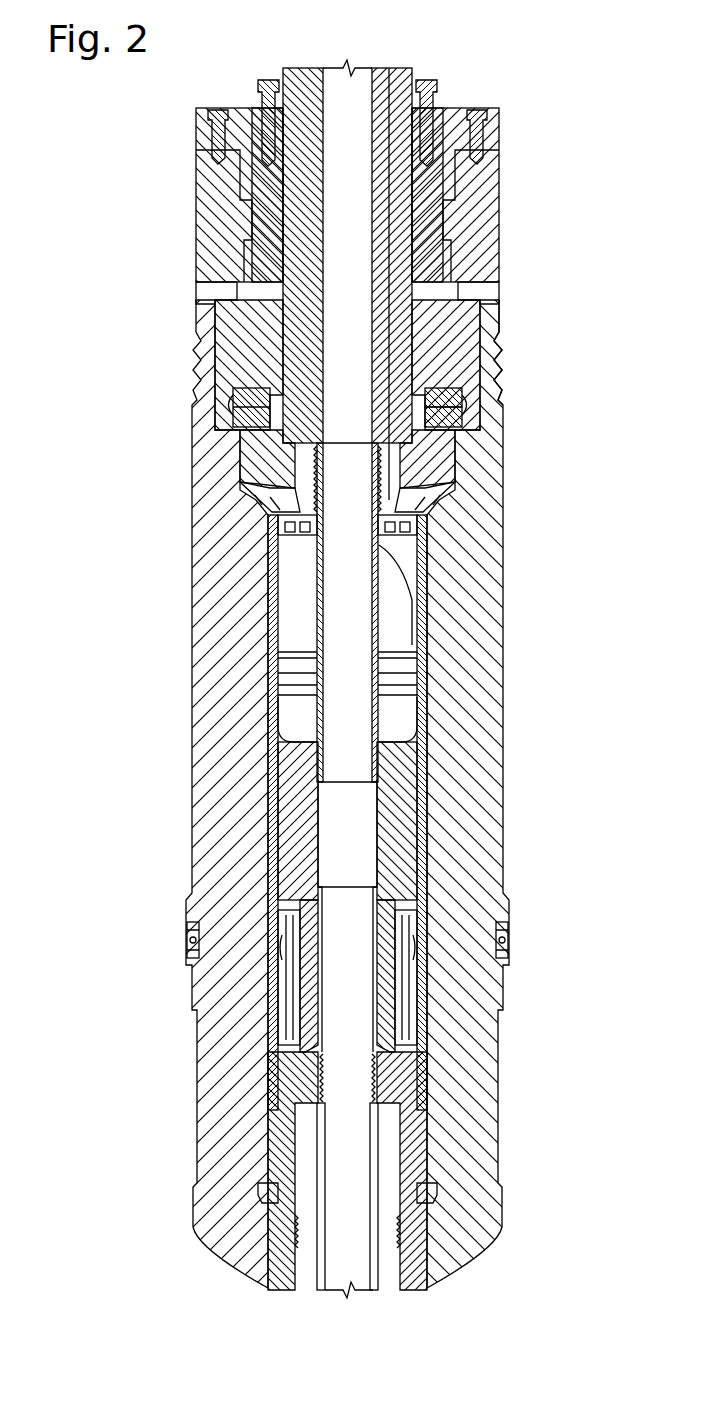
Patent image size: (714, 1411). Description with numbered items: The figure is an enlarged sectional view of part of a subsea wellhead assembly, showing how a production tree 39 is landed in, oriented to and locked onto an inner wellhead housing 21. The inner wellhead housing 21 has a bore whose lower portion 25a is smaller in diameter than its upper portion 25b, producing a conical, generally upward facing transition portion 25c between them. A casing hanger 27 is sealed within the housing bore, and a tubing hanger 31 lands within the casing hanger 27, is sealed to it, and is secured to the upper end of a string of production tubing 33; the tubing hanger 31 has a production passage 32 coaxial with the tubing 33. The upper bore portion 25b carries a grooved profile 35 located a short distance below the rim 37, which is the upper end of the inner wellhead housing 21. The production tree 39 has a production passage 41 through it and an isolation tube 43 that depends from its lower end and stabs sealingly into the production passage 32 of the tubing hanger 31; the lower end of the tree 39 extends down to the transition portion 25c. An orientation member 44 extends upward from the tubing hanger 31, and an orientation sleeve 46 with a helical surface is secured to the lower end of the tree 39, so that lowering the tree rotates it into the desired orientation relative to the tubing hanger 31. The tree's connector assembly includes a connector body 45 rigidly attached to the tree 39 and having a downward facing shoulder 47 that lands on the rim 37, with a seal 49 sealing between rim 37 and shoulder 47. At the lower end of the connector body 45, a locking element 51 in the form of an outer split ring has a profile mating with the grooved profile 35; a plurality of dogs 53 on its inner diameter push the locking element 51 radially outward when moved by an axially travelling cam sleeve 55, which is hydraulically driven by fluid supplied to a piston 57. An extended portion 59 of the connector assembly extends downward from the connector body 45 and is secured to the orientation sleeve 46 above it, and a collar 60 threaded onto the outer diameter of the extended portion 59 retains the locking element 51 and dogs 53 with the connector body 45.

The inner wellhead housing 21 is at (488, 832).
The lower portion of bore 25a is at (298, 790).
The upper portion of bore 25b is at (245, 358).
The transition portion 25c is at (270, 490).
The casing hanger 27 is at (280, 1145).
The tubing hanger 31 is at (385, 967).
The production passage 32 is at (364, 1038).
The production tubing 33 is at (380, 1150).
The grooved profile 35 is at (247, 410).
The rim 37 is at (215, 299).
The production tree 39 is at (302, 95).
The production passage 41 is at (364, 243).
The isolation tube 43 is at (327, 637).
The orientation member 44 is at (427, 660).
The connector body 45 is at (480, 215).
The orientation sleeve 46 is at (425, 562).
The downward facing shoulder 47 is at (495, 320).
The seal 49 is at (465, 290).
The locking element 51 is at (450, 404).
The dogs 53 is at (455, 389).
The cam sleeve 55 is at (430, 248).
The piston 57 is at (447, 196).
The extended portion 59 is at (425, 482).
The collar 60 is at (450, 450).